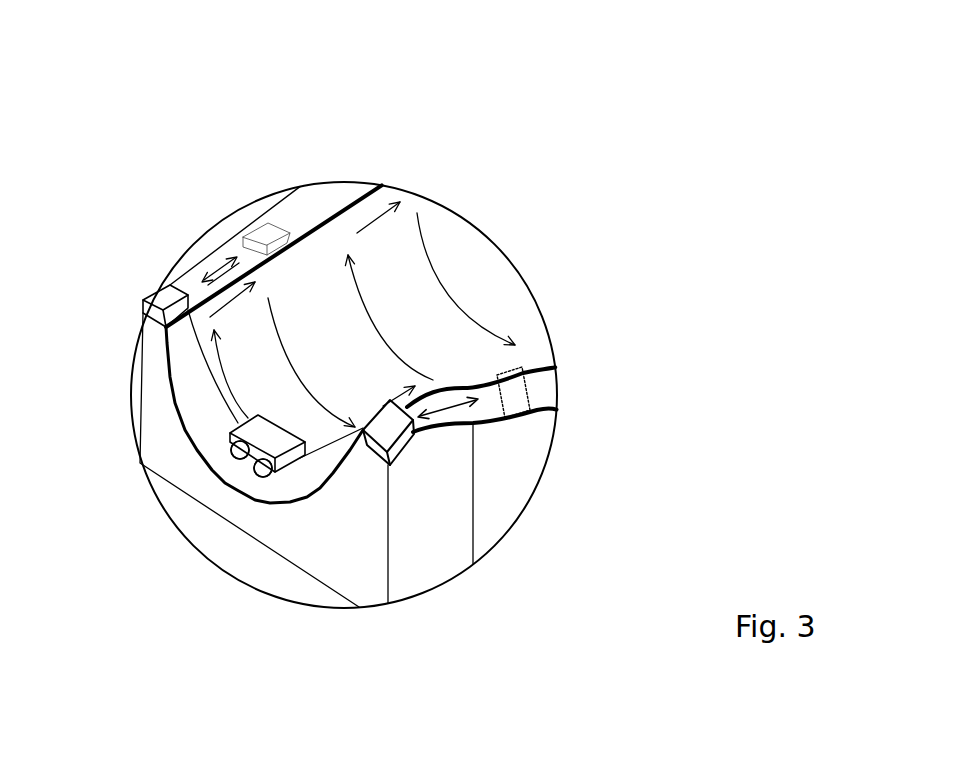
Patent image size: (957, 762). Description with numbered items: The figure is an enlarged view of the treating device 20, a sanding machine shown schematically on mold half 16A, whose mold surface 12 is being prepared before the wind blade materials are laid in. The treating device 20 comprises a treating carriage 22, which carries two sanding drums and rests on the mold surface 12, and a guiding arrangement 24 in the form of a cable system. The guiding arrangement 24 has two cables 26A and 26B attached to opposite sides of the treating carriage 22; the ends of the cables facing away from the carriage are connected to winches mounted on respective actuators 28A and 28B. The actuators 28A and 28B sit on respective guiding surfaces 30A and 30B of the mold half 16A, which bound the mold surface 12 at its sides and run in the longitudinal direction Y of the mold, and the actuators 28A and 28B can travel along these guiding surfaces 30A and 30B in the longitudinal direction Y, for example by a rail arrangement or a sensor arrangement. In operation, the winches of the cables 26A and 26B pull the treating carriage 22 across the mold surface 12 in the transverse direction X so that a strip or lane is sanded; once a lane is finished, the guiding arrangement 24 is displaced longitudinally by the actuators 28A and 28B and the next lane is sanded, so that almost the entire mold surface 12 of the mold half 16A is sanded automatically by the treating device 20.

The mold surface 12 is at (445, 330).
The mold half 16A is at (423, 563).
The treating device 20 is at (226, 453).
The treating carriage 22 is at (270, 443).
The guiding arrangement 24 is at (218, 397).
The cable 26A is at (213, 375).
The cable 26B is at (320, 445).
The actuator 28A is at (160, 294).
The actuator 28B is at (390, 430).
The guiding surface 30A is at (305, 215).
The guiding surface 30B is at (540, 393).